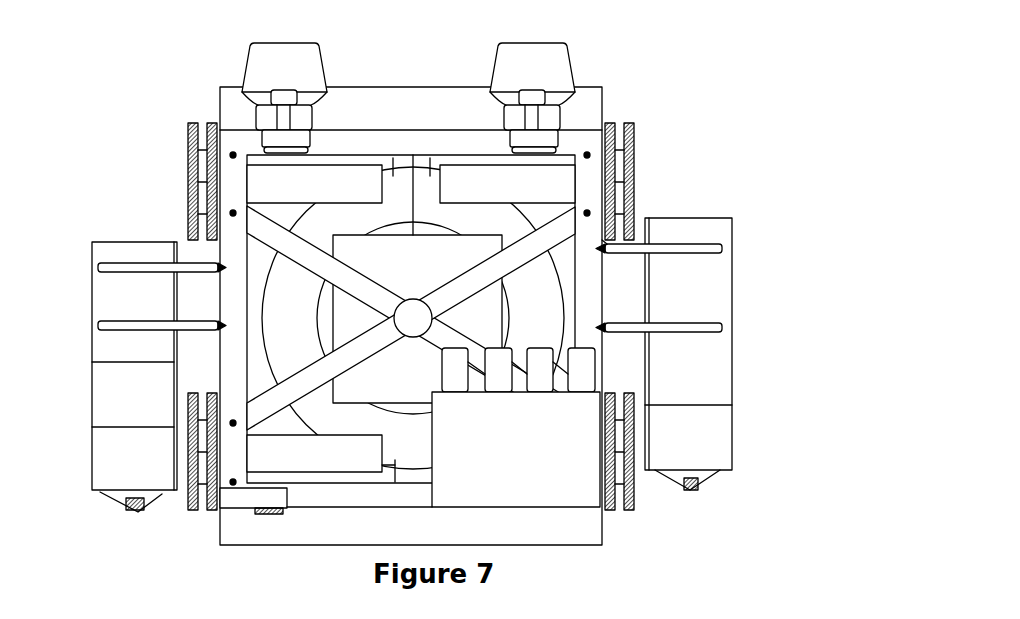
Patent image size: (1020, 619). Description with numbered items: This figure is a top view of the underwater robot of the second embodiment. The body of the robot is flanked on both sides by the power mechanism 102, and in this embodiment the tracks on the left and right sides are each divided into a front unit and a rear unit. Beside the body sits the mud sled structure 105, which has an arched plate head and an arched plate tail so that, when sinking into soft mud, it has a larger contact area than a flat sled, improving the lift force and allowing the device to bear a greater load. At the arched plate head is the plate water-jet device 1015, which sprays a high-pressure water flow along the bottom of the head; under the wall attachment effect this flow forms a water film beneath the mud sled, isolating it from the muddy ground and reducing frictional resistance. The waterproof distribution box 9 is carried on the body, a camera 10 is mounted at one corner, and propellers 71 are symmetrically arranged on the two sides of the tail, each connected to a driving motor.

The propeller 71 is at (532, 63).
The power mechanism 102 is at (637, 157).
The mud sled structure 105 is at (693, 275).
The waterproof distribution box 9 is at (570, 405).
The plate water-jet device 1015 is at (700, 483).
The camera 10 is at (237, 500).